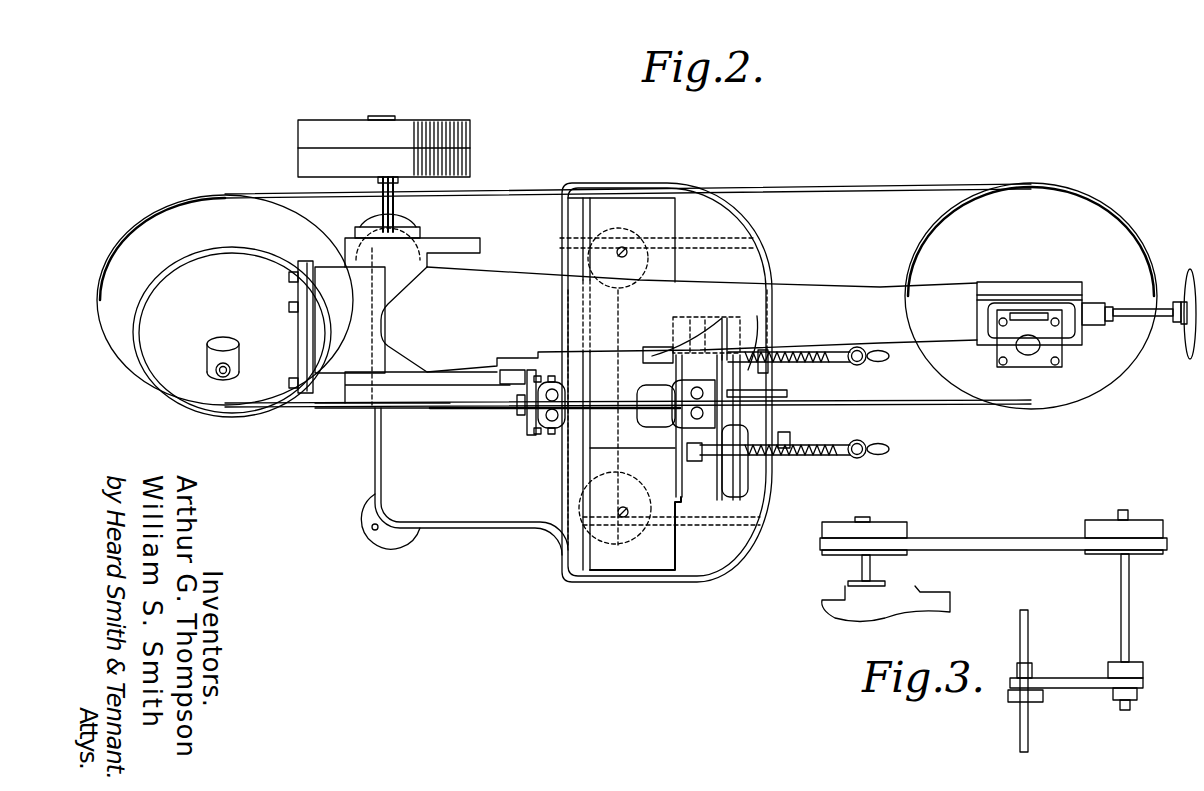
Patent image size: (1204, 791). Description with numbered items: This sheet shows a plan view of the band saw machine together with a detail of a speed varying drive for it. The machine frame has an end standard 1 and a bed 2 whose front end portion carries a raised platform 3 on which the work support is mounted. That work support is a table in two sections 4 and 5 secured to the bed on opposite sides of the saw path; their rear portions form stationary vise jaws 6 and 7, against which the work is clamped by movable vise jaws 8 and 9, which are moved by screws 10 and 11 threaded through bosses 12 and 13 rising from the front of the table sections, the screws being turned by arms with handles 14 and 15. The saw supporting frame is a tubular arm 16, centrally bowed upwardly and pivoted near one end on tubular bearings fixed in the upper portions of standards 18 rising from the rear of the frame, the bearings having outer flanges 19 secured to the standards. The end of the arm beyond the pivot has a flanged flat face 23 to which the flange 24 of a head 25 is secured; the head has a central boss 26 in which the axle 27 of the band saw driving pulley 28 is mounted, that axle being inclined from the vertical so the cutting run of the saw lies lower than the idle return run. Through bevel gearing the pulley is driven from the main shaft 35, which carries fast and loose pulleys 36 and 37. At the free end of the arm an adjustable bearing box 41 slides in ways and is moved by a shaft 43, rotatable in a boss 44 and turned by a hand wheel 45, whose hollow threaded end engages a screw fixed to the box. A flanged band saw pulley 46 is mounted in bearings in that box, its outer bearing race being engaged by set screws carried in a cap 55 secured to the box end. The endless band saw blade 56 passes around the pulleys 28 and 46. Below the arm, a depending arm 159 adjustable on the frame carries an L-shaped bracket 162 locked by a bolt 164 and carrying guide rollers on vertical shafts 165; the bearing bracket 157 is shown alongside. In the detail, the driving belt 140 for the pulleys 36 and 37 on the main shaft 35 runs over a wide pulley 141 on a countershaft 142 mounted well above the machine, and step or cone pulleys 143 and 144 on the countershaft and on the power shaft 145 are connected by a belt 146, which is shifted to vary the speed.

In FIG. 2, the end standard 1 is at (360, 492).
In FIG. 2, the bed 2 is at (490, 510).
In FIG. 2, the platform 3 is at (616, 575).
In FIG. 2, the table section 4 is at (658, 568).
In FIG. 2, the table section 5 is at (648, 256).
In FIG. 2, the stationary vise jaw 6 is at (587, 478).
In FIG. 2, the stationary vise jaw 7 is at (590, 250).
In FIG. 2, the movable vise jaw 8 is at (678, 470).
In FIG. 2, the movable vise jaw 9 is at (660, 357).
In FIG. 2, the screw 10 is at (836, 458).
In FIG. 2, the screw 11 is at (825, 357).
In FIG. 2, the boss 12 is at (740, 468).
In FIG. 2, the boss 13 is at (733, 335).
In FIG. 2, the handle 14 is at (876, 456).
In FIG. 2, the handle 15 is at (870, 358).
In FIG. 2, the tubular arm 16 is at (861, 295).
In FIG. 2, the standard 18 is at (453, 247).
In FIG. 2, the outer flange 19 is at (365, 405).
In FIG. 2, the flanged flat face 23 is at (306, 393).
In FIG. 2, the flange 24 is at (296, 390).
In FIG. 2, the head 25 is at (190, 392).
In FIG. 2, the central boss 26 is at (236, 368).
In FIG. 2, the axle 27 is at (229, 373).
In FIG. 2, the band saw driving pulley 28 is at (158, 223).
In FIG. 2, the main shaft 35 is at (398, 216).
In FIG. 3, the main shaft 35 is at (872, 568).
In FIG. 2, the fast pulley 36 is at (300, 156).
In FIG. 3, the fast pulley 36 is at (825, 557).
In FIG. 2, the loose pulley 37 is at (305, 130).
In FIG. 3, the loose pulley 37 is at (848, 522).
In FIG. 2, the adjustable bearing box 41 is at (1022, 315).
In FIG. 2, the shaft 43 is at (1163, 320).
In FIG. 2, the boss 44 is at (1097, 306).
In FIG. 2, the hand wheel 45 is at (1186, 272).
In FIG. 2, the band saw pulley 46 is at (1097, 380).
In FIG. 2, the cap 55 is at (1052, 361).
In FIG. 2, the band saw blade 56 is at (858, 187).
In FIG. 3, the driving belt 140 is at (982, 545).
In FIG. 3, the wide pulley 141 is at (1140, 522).
In FIG. 3, the countershaft 142 is at (1130, 608).
In FIG. 3, the step pulley 143 is at (1142, 666).
In FIG. 3, the step pulley 144 is at (1045, 695).
In FIG. 3, the power shaft 145 is at (1030, 733).
In FIG. 3, the belt 146 is at (1068, 680).
In FIG. 2, the shaft 157 is at (505, 380).
In FIG. 2, the arm 159 is at (745, 360).
In FIG. 2, the L-shaped bracket 162 is at (540, 413).
In FIG. 2, the bolt 164 is at (520, 406).
In FIG. 2, the vertical shaft 165 is at (553, 421).